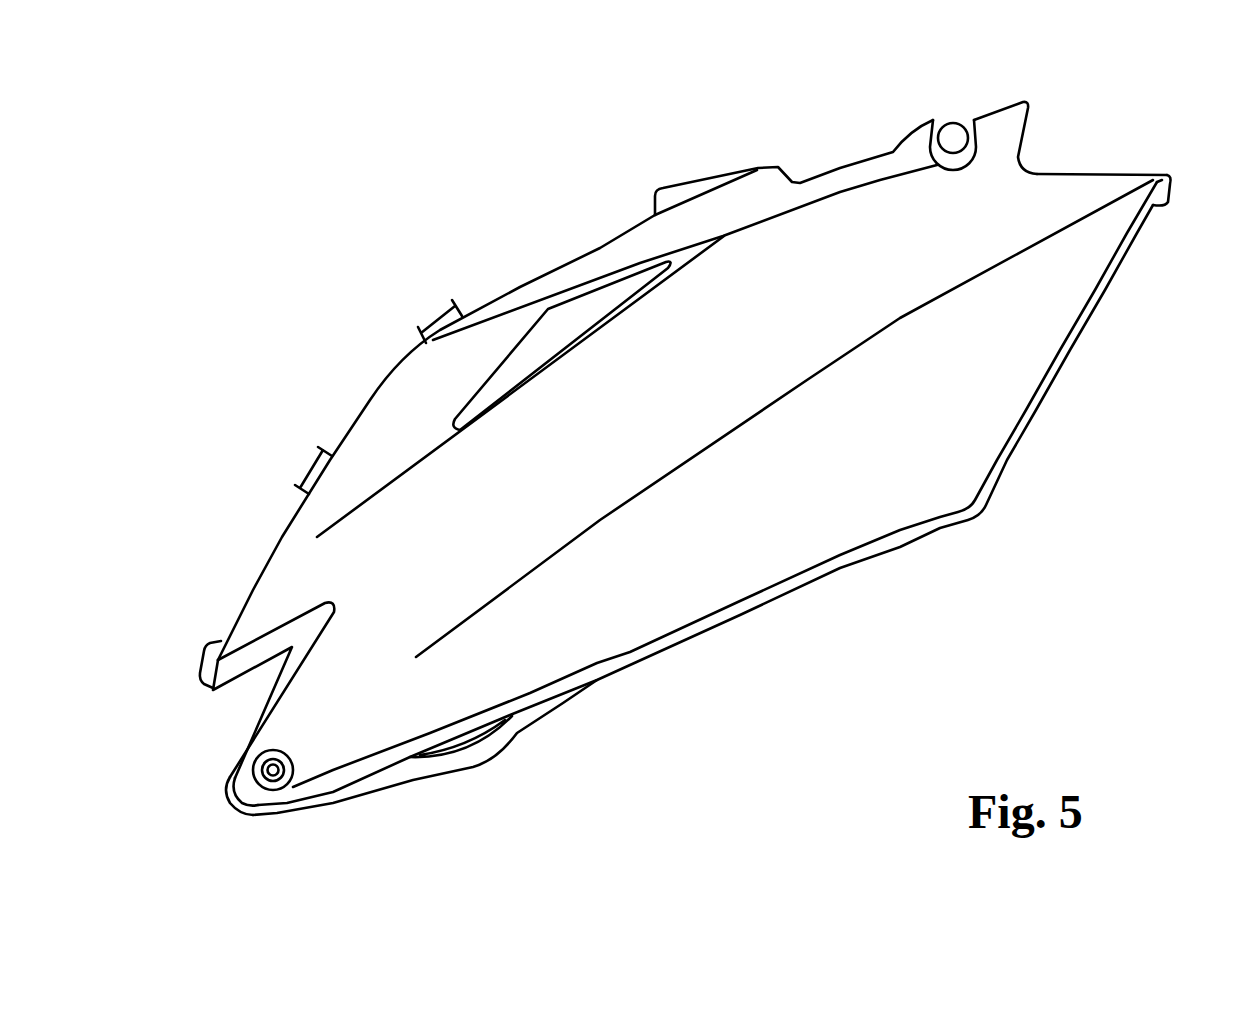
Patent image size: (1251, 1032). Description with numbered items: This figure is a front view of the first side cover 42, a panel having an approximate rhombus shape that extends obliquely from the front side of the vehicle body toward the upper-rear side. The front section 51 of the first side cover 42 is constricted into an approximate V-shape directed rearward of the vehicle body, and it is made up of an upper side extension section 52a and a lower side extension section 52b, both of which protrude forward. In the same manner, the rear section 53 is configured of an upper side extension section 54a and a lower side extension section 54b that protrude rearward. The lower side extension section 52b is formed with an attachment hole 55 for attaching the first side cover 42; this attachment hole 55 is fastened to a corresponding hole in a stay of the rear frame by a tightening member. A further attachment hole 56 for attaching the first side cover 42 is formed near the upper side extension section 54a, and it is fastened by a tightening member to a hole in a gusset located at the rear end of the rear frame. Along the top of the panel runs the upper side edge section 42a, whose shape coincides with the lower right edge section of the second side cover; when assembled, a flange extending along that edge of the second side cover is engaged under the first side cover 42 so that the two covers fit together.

The first side cover 42 is at (886, 549).
The upper side edge section 42a is at (370, 400).
The front section 51 is at (252, 694).
The upper side extension section 52a is at (237, 640).
The lower side extension section 52b is at (245, 792).
The rear section 53 is at (1043, 155).
The upper side extension section 54a is at (999, 118).
The lower side extension section 54b is at (1153, 205).
The attachment hole 55 is at (278, 773).
The attachment hole 56 is at (947, 135).